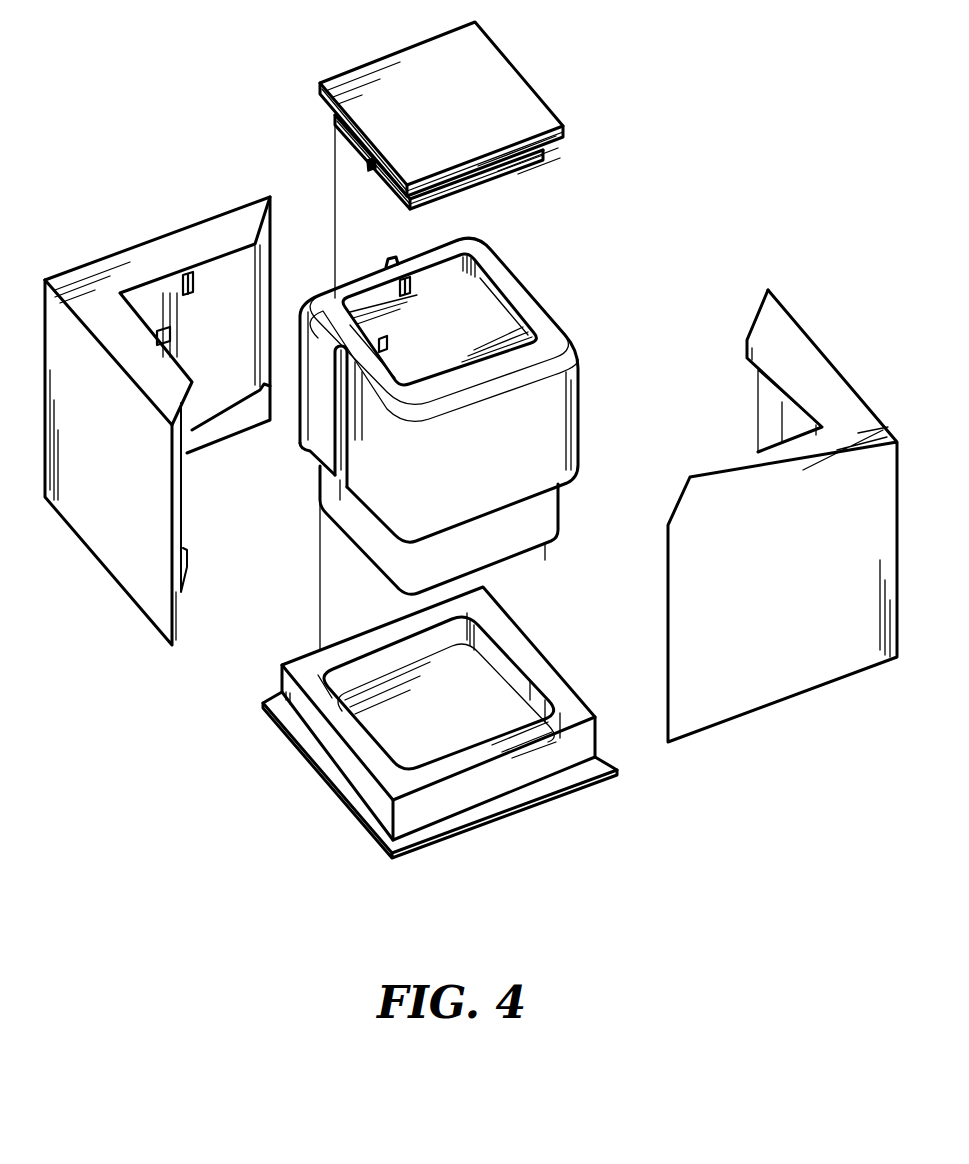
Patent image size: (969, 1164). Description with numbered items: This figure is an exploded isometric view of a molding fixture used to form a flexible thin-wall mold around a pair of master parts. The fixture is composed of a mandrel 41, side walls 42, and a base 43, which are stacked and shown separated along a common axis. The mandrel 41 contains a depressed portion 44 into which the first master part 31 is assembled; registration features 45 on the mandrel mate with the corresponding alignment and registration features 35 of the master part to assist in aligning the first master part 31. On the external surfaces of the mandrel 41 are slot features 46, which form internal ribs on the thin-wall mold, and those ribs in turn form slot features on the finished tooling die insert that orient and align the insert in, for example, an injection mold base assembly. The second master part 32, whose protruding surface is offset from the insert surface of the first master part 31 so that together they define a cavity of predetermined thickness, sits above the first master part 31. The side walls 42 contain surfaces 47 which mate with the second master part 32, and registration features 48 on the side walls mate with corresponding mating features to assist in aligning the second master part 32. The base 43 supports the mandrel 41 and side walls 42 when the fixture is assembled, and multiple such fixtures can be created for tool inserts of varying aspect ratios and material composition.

The first master part 31 is at (522, 170).
The second master part 32 is at (467, 77).
The alignment and registration features 35 is at (370, 166).
The mandrel 41 is at (568, 332).
The side walls 42 is at (122, 538).
The base 43 is at (480, 827).
The depressed portion 44 is at (467, 312).
The registration features 45 is at (384, 338).
The slot features 46 is at (388, 258).
The surfaces 47 is at (225, 265).
The registration features 48 is at (163, 333).